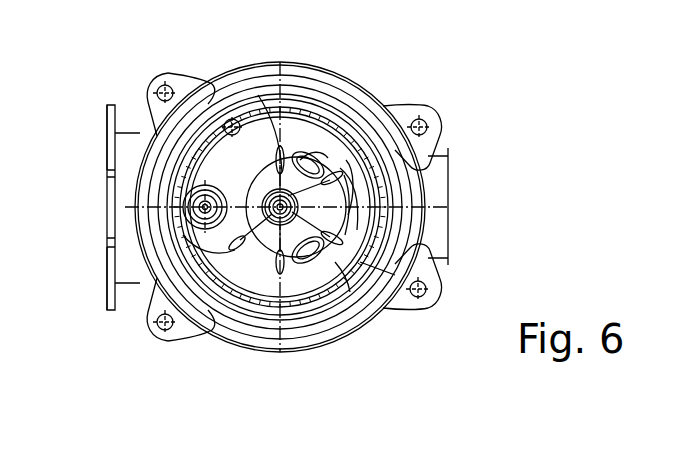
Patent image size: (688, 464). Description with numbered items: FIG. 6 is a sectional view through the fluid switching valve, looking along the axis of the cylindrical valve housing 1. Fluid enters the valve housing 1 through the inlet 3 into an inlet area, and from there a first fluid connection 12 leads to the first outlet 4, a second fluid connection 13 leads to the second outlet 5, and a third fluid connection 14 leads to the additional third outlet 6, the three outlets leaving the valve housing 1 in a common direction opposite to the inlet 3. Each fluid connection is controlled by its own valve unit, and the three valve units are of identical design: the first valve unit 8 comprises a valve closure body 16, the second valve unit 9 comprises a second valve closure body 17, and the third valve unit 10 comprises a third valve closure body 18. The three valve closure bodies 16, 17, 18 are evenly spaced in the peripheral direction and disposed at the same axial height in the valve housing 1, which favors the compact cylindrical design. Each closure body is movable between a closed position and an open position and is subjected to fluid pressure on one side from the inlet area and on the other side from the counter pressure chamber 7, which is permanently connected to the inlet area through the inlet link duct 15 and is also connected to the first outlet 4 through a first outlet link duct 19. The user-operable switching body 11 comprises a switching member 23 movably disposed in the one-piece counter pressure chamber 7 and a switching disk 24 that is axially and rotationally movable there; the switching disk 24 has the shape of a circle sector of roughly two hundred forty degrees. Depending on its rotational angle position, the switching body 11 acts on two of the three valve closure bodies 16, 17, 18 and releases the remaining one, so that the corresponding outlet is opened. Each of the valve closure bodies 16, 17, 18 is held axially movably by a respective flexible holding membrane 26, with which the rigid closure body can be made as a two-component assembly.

The valve housing 1 is at (297, 353).
The inlet 3 is at (448, 190).
The first outlet 4 is at (107, 207).
The second outlet 5 is at (107, 122).
The third outlet 6 is at (107, 285).
The counter pressure chamber 7 is at (270, 118).
The first valve unit 8 is at (185, 184).
The second valve unit 9 is at (320, 150).
The third valve unit 10 is at (313, 267).
The switching body 11 is at (270, 270).
The first fluid connection 12 is at (246, 250).
The second fluid connection 13 is at (310, 153).
The third fluid connection 14 is at (362, 262).
The inlet link duct 15 is at (236, 120).
The valve closure body 16 is at (212, 258).
The second valve closure body 17 is at (340, 135).
The third valve closure body 18 is at (340, 263).
The first outlet link duct 19 is at (205, 180).
The switching member 23 is at (348, 167).
The switching disk 24 is at (360, 150).
The holding membrane 26 is at (200, 230).